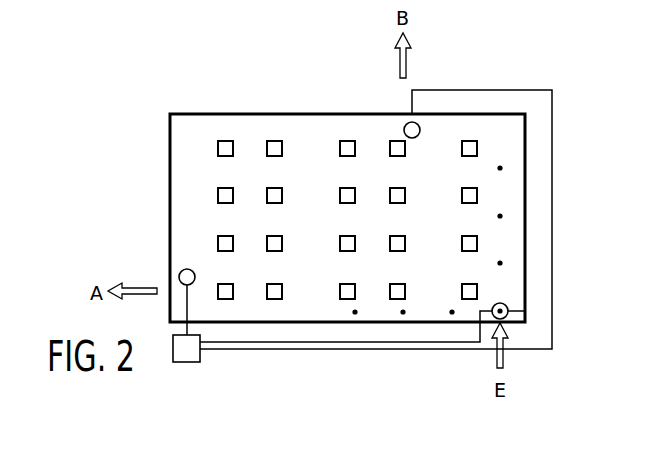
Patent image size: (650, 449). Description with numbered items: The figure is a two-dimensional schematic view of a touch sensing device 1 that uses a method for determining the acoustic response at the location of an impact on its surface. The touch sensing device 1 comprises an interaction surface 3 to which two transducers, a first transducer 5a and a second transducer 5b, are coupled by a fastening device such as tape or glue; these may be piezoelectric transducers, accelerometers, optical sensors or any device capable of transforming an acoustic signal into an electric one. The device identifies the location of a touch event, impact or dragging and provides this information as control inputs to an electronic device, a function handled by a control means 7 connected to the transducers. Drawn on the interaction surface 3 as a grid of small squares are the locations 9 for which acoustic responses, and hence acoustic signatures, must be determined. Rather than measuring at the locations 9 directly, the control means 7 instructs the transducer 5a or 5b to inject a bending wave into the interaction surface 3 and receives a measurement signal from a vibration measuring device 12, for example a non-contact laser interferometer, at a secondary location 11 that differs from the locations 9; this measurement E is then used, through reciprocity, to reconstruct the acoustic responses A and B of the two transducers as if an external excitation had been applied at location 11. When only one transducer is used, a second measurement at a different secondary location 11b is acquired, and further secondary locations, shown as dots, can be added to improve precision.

The touch sensing device 1 is at (147, 103).
The interaction surface 3 is at (447, 125).
The first transducer 5a is at (181, 270).
The second transducer 5b is at (405, 124).
The control means 7 is at (187, 362).
The locations 9 is at (226, 140).
The secondary location 11 is at (508, 310).
The different secondary location 11b is at (452, 318).
The vibration measuring device 12 is at (506, 305).